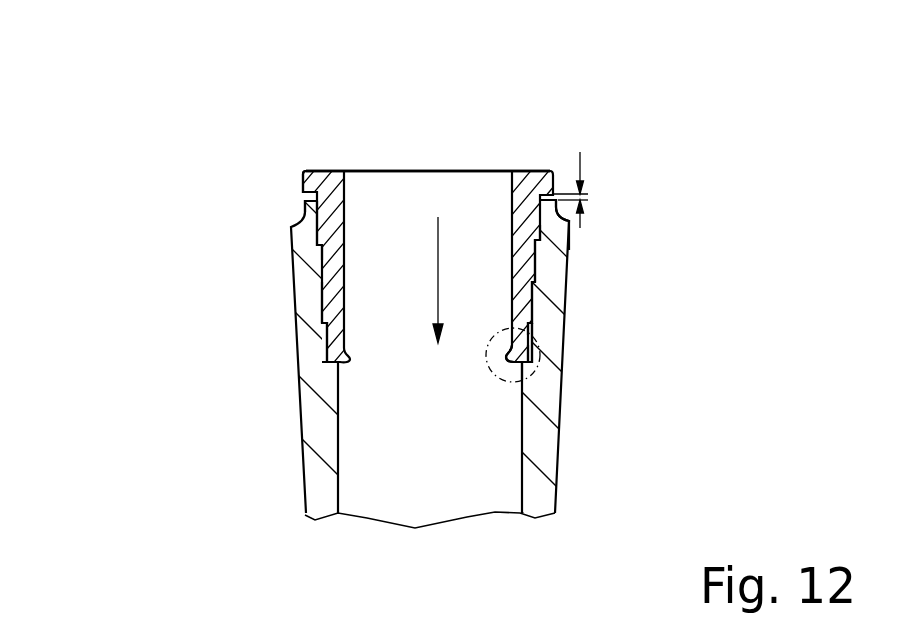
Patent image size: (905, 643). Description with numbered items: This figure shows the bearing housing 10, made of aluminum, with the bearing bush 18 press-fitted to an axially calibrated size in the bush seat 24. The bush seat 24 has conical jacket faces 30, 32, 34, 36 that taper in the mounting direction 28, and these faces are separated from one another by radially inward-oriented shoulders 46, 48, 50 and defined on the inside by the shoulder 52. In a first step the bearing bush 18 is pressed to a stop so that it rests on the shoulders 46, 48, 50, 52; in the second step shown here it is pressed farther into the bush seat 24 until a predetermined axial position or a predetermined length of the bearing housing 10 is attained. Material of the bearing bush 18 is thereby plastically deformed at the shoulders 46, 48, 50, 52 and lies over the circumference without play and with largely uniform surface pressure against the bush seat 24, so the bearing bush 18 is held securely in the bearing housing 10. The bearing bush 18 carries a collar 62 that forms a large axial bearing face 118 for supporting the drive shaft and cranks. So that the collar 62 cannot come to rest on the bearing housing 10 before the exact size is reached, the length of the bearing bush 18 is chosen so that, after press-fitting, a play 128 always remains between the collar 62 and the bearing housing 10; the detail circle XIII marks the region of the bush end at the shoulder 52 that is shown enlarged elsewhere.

The bearing housing 10 is at (426, 344).
The bearing bush 18 is at (443, 196).
The bush seat 24 is at (532, 341).
The mounting direction 28 is at (438, 247).
The conical jacket face 30 is at (189, 186).
The conical jacket face 32 is at (327, 250).
The conical jacket face 34 is at (340, 299).
The conical jacket face 36 is at (250, 371).
The shoulder 46 is at (631, 188).
The shoulder 48 is at (535, 282).
The shoulder 50 is at (535, 322).
The shoulder 52 is at (615, 397).
The collar 62 is at (303, 176).
The axial bearing face 118 is at (531, 169).
The play 128 is at (641, 124).
The detail circle XIII is at (670, 408).